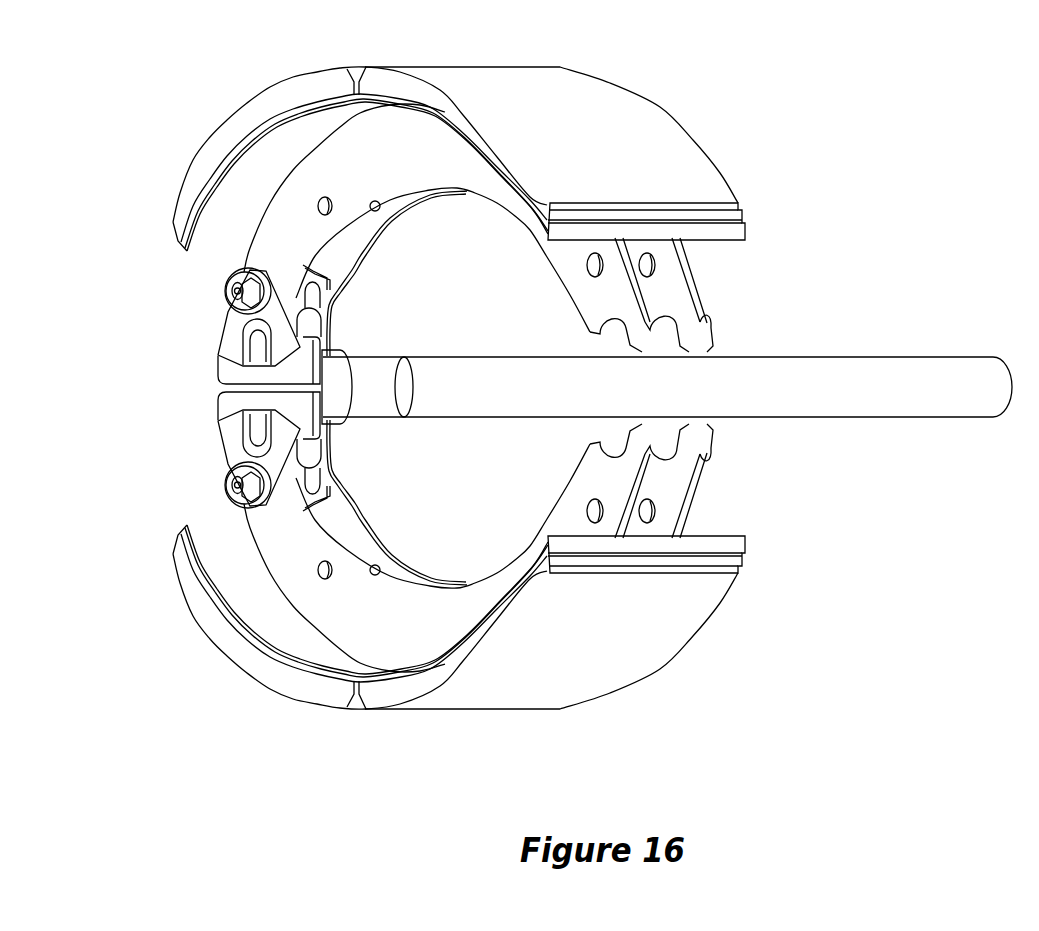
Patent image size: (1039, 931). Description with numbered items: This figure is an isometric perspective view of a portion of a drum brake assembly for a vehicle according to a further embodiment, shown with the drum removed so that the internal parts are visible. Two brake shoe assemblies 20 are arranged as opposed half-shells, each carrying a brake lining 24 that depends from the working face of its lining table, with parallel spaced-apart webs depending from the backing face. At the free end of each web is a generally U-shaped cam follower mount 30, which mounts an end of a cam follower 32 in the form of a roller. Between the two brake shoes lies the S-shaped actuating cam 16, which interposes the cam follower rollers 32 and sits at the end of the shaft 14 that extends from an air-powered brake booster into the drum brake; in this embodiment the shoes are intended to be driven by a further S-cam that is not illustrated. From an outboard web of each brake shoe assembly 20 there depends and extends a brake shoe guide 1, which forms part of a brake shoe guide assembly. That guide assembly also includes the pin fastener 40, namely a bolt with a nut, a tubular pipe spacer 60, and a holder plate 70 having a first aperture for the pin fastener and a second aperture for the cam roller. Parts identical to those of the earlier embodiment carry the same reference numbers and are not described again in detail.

The brake shoe guide 1 is at (215, 326).
The shaft 14 is at (900, 372).
The S-shaped actuating cam 16 is at (334, 428).
The brake shoe assembly 20 is at (654, 104).
The brake lining 24 is at (725, 180).
The cam follower mount 30 is at (334, 360).
The cam follower 32 is at (255, 337).
The pin fastener 40 is at (230, 289).
The tubular pipe spacer 60 is at (325, 282).
The holder plate 70 is at (313, 294).